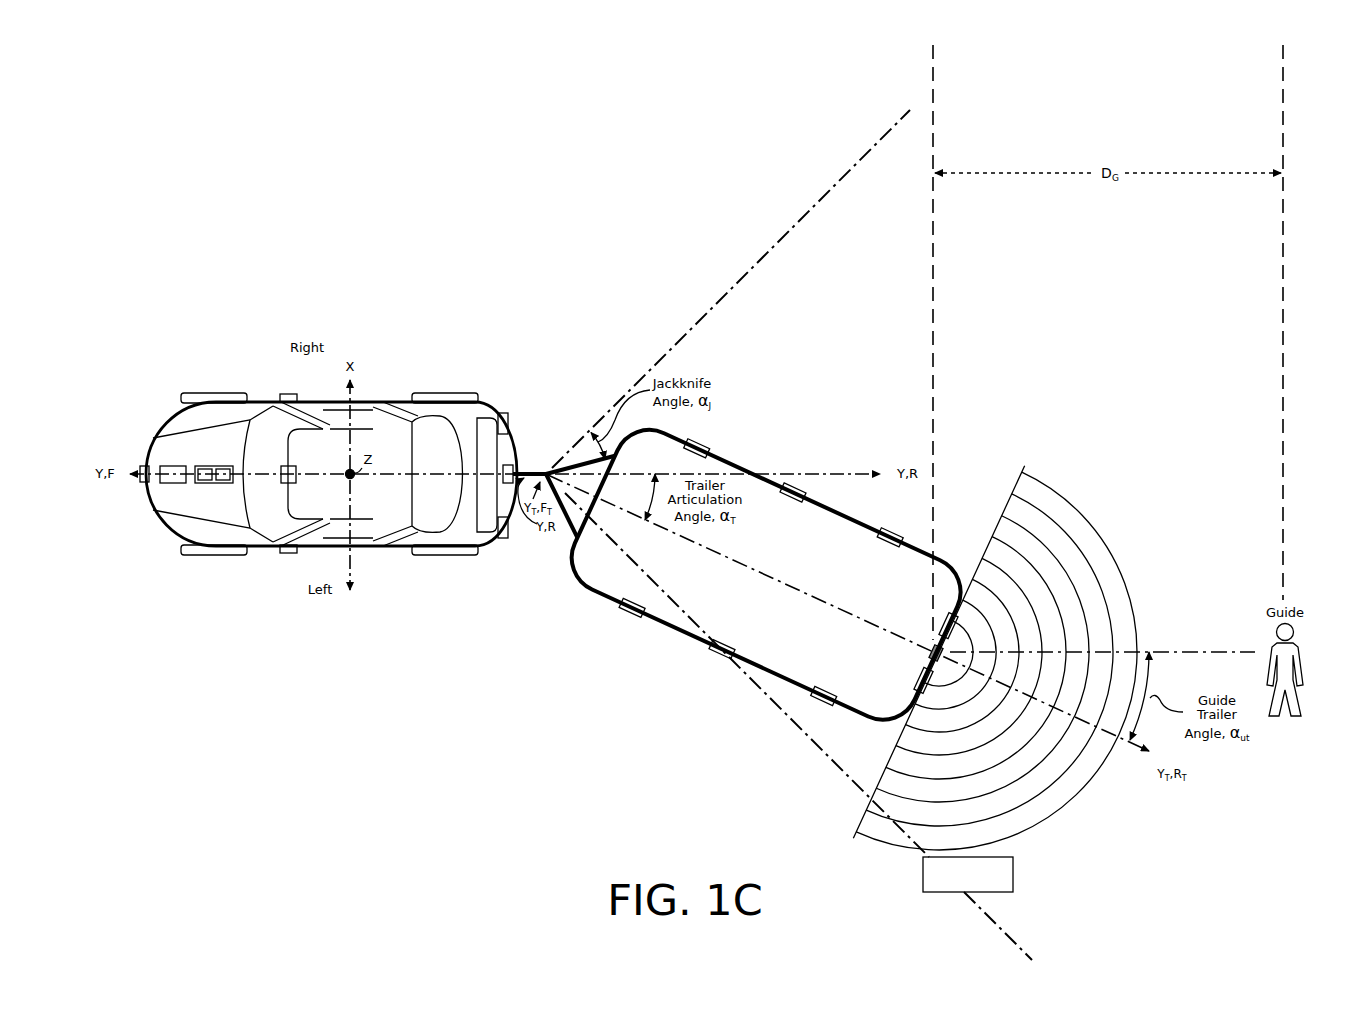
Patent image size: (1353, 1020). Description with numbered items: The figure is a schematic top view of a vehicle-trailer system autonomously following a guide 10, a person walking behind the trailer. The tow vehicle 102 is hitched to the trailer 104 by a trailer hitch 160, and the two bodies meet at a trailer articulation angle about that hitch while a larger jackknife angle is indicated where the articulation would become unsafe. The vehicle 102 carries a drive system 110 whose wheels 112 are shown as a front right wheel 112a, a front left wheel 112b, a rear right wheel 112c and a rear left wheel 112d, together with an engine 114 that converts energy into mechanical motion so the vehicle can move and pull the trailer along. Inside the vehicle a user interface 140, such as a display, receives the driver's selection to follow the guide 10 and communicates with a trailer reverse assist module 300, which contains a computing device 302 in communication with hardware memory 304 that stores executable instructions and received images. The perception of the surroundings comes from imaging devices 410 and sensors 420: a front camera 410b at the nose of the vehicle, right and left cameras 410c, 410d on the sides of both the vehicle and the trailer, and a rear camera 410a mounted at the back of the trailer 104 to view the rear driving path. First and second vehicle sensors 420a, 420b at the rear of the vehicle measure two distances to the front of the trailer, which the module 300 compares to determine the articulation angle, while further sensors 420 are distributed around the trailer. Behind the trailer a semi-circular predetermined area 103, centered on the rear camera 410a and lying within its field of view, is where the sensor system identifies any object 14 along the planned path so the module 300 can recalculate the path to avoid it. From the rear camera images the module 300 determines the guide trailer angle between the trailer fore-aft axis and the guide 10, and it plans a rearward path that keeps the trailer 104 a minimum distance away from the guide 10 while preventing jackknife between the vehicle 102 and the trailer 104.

The vehicle 102 is at (165, 414).
The trailer 104 is at (753, 575).
The predetermined area 103 is at (1076, 508).
The drive system 110 is at (329, 473).
The wheels 112 is at (329, 473).
The front right wheel 112a is at (226, 393).
The front left wheel 112b is at (226, 555).
The rear right wheel 112c is at (448, 393).
The rear left wheel 112d is at (452, 555).
The engine 114 is at (168, 466).
The user interface 140 is at (297, 472).
The trailer hitch 160 is at (530, 468).
The trailer reverse assist module 300 is at (208, 467).
The computing device 302 is at (204, 486).
The hardware memory 304 is at (226, 486).
The imaging devices 410 is at (522, 515).
The rear camera 410a is at (934, 648).
The front camera 410b is at (142, 467).
The right camera 410c is at (290, 394).
The left camera 410d is at (290, 553).
The sensors 420 is at (723, 532).
The first vehicle sensor 420a is at (505, 412).
The second vehicle sensor 420b is at (505, 539).
The guide 10 is at (1272, 717).
The object 14 is at (968, 874).